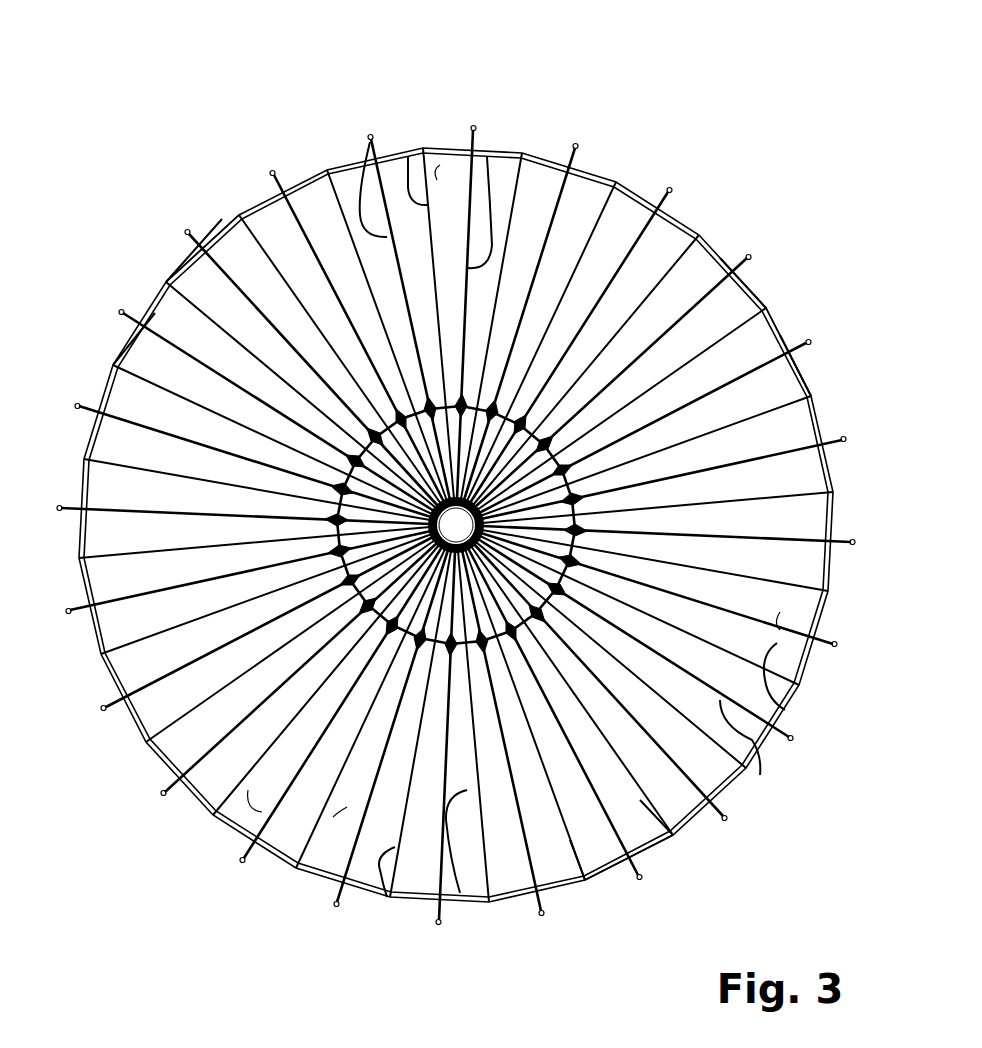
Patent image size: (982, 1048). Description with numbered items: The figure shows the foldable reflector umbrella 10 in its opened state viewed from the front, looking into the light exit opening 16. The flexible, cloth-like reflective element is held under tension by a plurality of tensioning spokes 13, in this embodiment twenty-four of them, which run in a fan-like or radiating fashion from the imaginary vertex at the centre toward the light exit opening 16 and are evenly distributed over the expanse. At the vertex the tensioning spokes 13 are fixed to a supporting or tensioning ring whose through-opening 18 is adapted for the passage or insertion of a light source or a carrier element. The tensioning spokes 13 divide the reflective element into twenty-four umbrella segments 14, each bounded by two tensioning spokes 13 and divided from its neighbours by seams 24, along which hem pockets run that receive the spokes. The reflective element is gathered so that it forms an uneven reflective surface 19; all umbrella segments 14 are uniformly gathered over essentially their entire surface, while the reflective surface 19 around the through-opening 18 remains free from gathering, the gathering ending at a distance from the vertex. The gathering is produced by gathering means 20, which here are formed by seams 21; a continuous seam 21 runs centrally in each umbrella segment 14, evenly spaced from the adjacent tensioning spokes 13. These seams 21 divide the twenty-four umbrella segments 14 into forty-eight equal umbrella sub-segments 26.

The reflector umbrella 10 is at (773, 88).
The tensioning spokes 13 is at (578, 150).
The umbrella segments 14 is at (142, 265).
The light exit opening 16 is at (744, 512).
The through-opening 18 is at (533, 160).
The reflective surface 19 is at (280, 768).
The gathering means 20 is at (446, 176).
The seams 21 is at (408, 160).
The seams 24 is at (357, 178).
The umbrella sub-segments 26 is at (188, 268).